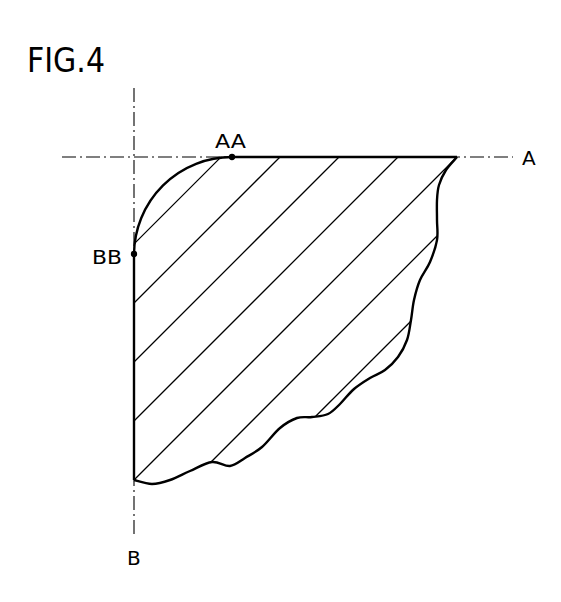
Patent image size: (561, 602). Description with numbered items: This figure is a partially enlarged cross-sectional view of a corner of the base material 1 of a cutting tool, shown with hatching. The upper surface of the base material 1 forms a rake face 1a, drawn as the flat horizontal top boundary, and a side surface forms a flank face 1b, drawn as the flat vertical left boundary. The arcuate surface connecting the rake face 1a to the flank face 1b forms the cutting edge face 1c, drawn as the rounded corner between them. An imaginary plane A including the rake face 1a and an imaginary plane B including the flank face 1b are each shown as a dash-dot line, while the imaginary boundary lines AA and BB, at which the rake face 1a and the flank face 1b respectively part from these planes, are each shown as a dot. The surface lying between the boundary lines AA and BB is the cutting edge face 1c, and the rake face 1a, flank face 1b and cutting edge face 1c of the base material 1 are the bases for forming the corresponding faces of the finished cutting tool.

The base material 1 is at (377, 313).
The rake face 1a is at (350, 157).
The flank face 1b is at (133, 388).
The cutting edge face 1c is at (166, 181).